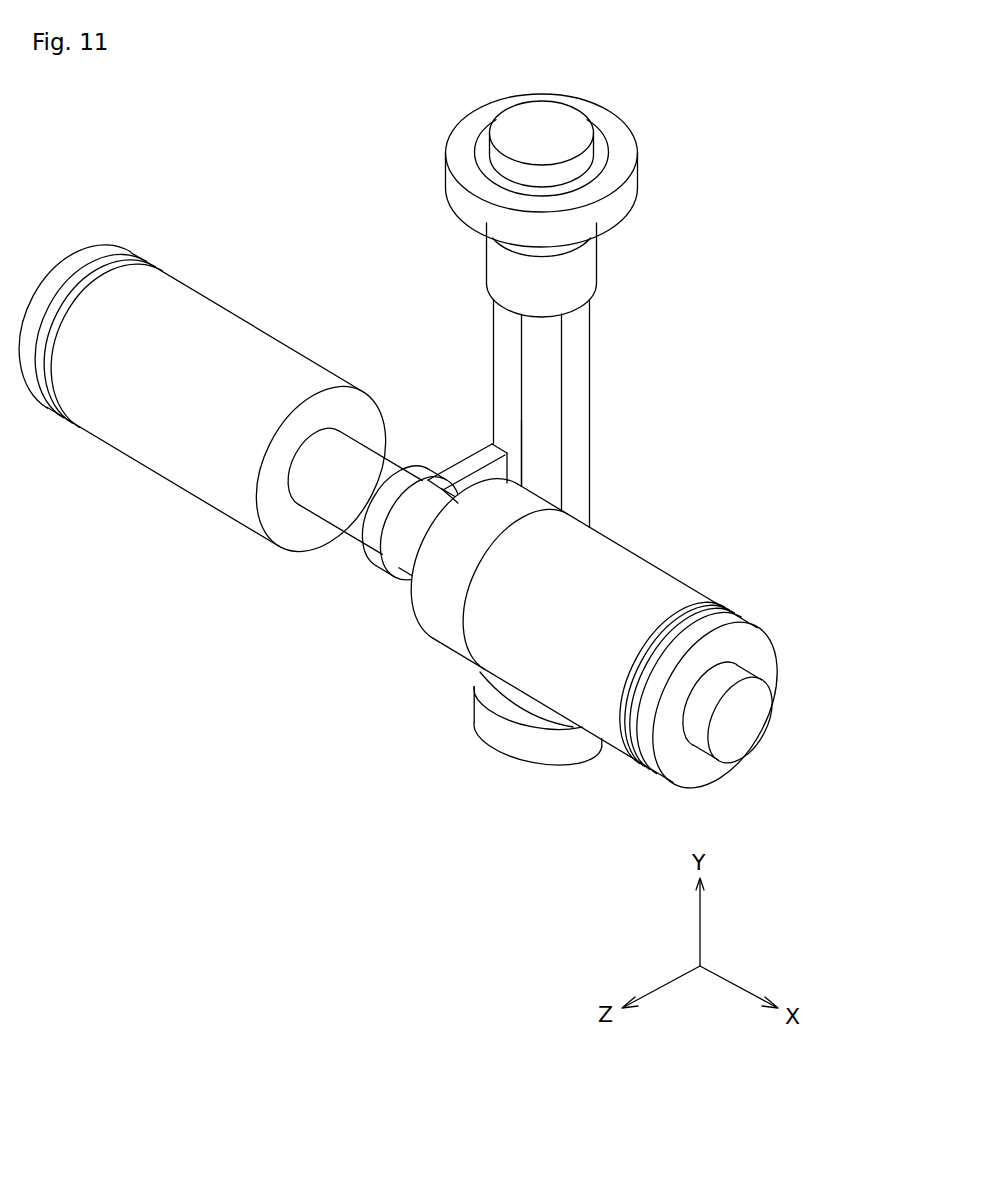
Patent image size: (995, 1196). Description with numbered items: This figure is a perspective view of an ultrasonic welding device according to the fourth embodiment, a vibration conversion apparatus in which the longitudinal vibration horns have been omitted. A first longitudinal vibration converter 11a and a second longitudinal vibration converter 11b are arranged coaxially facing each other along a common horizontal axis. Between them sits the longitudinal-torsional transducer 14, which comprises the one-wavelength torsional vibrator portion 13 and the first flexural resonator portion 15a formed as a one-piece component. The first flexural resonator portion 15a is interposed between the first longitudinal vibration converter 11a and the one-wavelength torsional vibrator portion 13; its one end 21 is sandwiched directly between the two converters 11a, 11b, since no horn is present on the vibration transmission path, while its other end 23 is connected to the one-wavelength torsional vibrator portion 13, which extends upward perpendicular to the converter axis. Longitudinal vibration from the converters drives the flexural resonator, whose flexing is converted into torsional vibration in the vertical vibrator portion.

The first longitudinal vibration converter 11a is at (136, 431).
The second longitudinal vibration converter 11b is at (627, 590).
The one-wavelength torsional vibrator portion 13 is at (580, 372).
The longitudinal-torsional transducer 14 is at (593, 323).
The first flexural resonator portion 15a is at (470, 450).
The one end of the first flexural resonator portion 21 is at (377, 517).
The other end of the first flexural resonator portion 23 is at (502, 440).